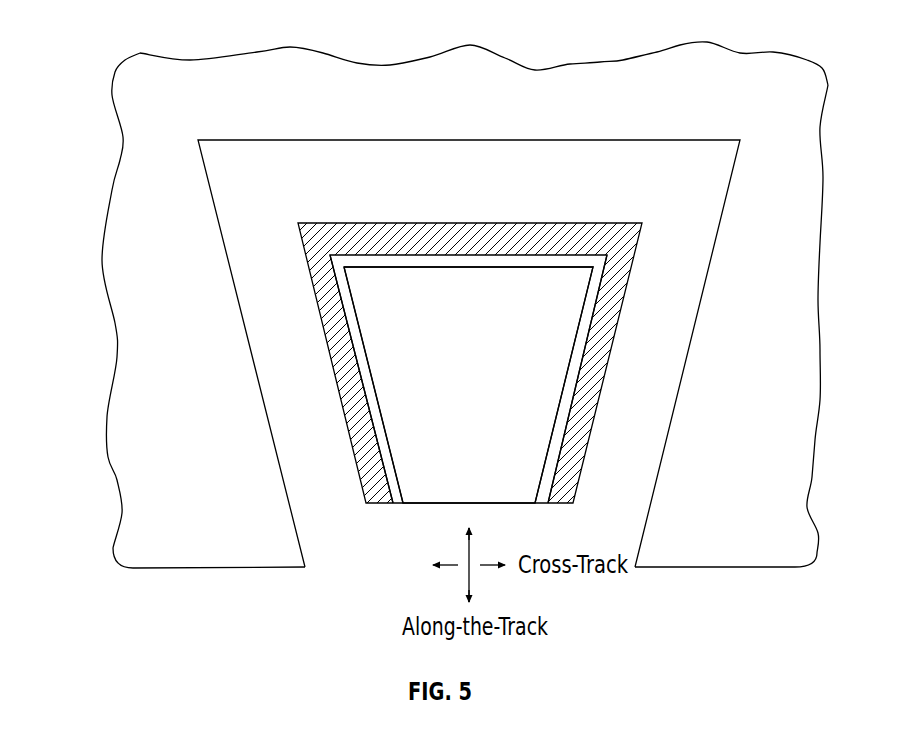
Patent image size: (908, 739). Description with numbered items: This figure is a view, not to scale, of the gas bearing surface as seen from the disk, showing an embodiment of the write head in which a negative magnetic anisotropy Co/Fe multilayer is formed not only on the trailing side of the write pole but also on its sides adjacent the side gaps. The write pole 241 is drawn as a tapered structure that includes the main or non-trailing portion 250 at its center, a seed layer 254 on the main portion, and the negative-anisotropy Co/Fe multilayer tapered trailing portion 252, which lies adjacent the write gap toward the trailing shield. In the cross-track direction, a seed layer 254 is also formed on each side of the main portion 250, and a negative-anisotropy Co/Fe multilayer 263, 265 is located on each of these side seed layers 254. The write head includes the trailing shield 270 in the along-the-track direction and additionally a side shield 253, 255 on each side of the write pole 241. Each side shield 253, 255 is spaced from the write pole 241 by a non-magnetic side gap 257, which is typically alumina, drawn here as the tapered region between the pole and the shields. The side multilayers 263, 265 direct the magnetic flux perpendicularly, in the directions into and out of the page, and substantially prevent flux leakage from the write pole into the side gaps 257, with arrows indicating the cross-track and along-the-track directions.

The write pole 241 is at (467, 324).
The main portion 250 is at (468, 385).
The tapered trailing portion 252 is at (533, 228).
The side shield 253 is at (810, 293).
The seed layer 254 is at (433, 262).
The side shield 255 is at (117, 238).
The side gap 257 is at (280, 420).
The side multilayer 263 is at (614, 310).
The side multilayer 265 is at (325, 310).
The trailing shield 270 is at (680, 60).